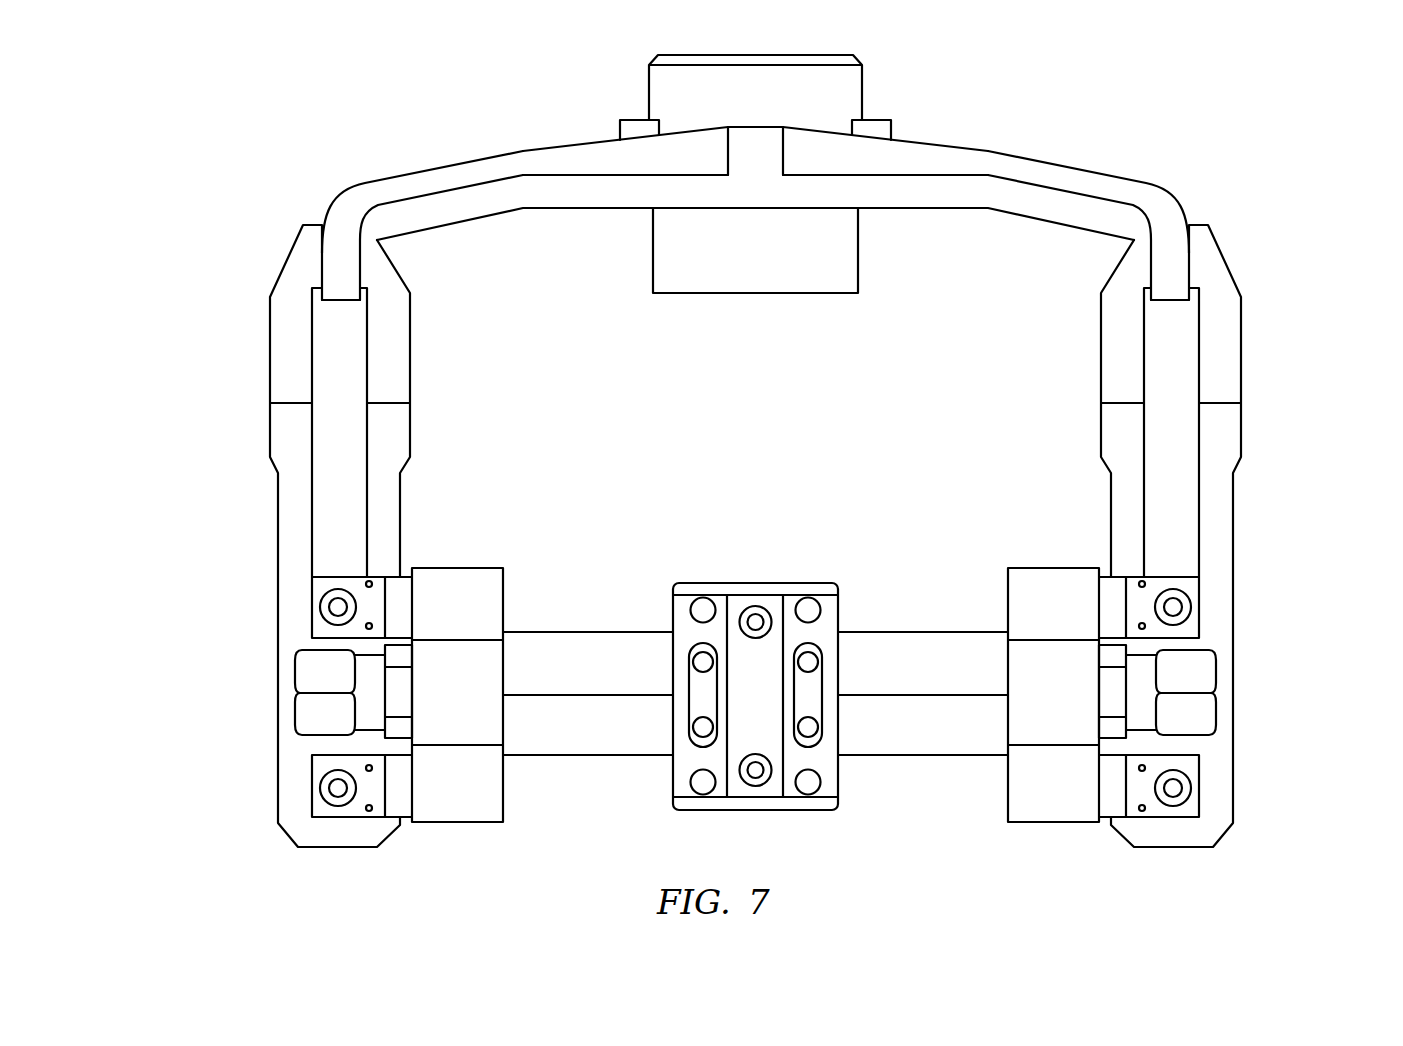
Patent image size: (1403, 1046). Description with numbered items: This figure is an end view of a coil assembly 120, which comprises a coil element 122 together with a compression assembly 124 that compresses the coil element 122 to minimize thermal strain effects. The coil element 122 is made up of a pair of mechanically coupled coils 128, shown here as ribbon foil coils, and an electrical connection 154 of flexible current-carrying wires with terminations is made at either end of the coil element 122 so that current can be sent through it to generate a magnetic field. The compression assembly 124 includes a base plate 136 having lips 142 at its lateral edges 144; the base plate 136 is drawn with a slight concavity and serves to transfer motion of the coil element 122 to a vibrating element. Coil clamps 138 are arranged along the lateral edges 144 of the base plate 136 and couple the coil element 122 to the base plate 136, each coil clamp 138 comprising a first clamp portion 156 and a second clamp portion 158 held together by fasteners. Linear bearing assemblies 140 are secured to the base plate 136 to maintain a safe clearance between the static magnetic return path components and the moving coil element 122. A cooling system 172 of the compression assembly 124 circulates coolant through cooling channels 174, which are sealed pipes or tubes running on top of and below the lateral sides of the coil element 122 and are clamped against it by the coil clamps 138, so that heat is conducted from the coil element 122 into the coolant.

The coil assembly 120 is at (753, 448).
The coil element 122 is at (755, 712).
The compression assembly 124 is at (1255, 380).
The coils 128 is at (859, 724).
The base plate 136 is at (1065, 175).
The coil clamps 138 is at (296, 536).
The linear bearing assemblies 140 is at (890, 56).
The lips 142 is at (685, 211).
The lateral edges 144 is at (358, 218).
The electrical connection 154 is at (747, 594).
The first clamp portion 156 is at (270, 295).
The second clamp portion 158 is at (268, 423).
The cooling system 172 is at (238, 697).
The cooling channels 174 is at (320, 598).